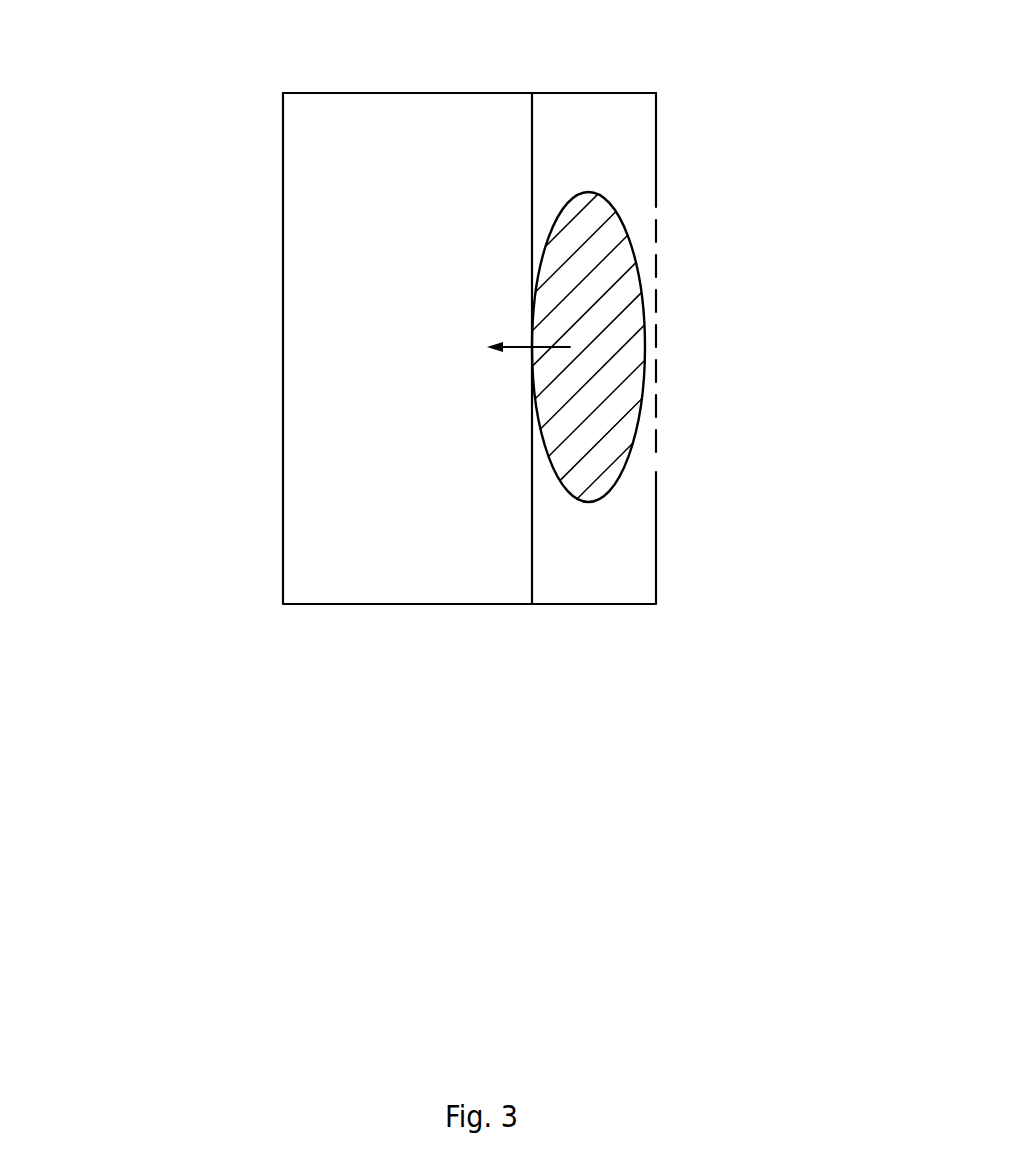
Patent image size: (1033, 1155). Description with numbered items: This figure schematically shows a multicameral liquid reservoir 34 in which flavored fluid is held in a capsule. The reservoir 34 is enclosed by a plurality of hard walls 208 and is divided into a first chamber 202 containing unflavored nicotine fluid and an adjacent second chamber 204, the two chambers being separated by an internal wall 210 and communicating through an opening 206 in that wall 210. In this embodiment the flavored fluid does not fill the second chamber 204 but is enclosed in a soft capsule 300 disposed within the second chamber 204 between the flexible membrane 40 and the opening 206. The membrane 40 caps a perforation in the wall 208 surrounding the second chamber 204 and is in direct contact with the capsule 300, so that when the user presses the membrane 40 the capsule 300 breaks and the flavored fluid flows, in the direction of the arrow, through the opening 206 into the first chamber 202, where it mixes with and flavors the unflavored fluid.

The multicameral liquid reservoir 34 is at (126, 87).
The first chamber 202 is at (407, 213).
The second chamber 204 is at (618, 557).
The opening 206 is at (528, 363).
The walls 208 is at (483, 93).
The internal wall 210 is at (532, 580).
The capsule 300 is at (592, 240).
The flexible membrane 40 is at (656, 338).